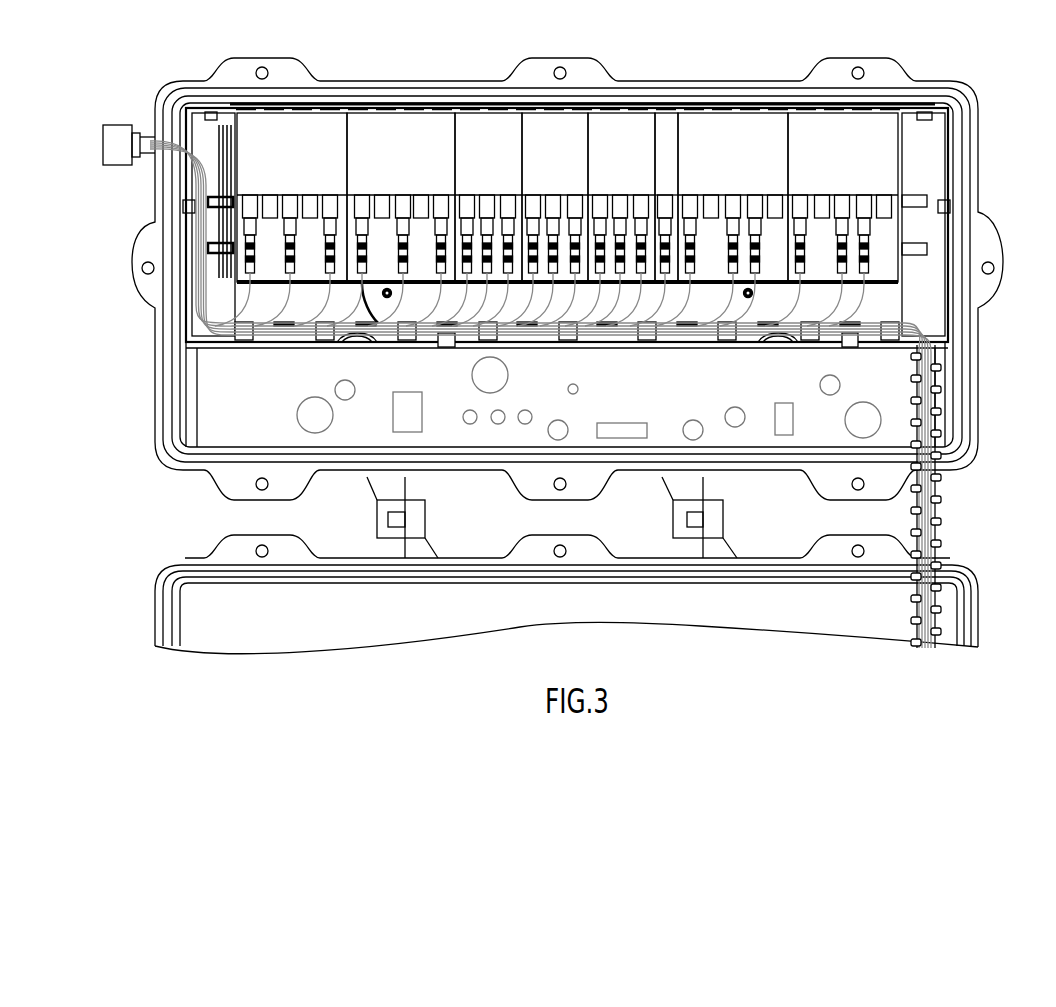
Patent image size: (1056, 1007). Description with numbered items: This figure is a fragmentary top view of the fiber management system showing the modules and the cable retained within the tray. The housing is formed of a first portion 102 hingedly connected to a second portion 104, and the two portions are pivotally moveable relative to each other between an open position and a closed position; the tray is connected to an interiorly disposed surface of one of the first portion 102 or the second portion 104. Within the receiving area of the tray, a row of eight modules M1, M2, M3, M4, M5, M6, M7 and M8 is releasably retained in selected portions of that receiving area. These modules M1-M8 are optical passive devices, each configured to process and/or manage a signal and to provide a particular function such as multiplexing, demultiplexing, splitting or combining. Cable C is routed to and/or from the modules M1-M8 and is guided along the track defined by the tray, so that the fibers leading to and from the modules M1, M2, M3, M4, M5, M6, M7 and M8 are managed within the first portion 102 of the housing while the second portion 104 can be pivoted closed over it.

The module M1 is at (315, 145).
The module M2 is at (410, 137).
The module M3 is at (483, 133).
The module M4 is at (560, 140).
The module M5 is at (628, 133).
The module M6 is at (663, 128).
The module M7 is at (715, 138).
The module M8 is at (872, 133).
The cable C is at (215, 333).
The first portion 102 is at (968, 400).
The second portion 104 is at (977, 617).